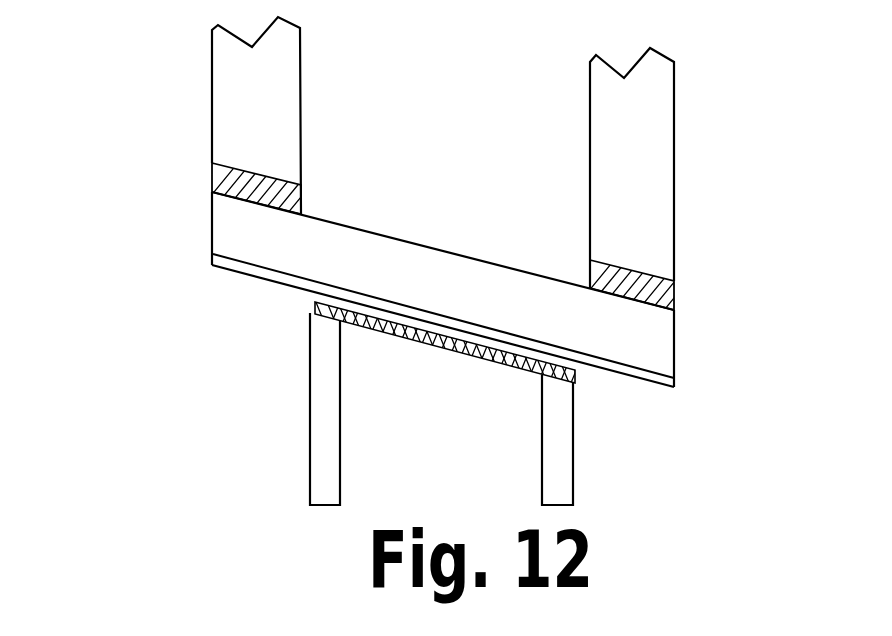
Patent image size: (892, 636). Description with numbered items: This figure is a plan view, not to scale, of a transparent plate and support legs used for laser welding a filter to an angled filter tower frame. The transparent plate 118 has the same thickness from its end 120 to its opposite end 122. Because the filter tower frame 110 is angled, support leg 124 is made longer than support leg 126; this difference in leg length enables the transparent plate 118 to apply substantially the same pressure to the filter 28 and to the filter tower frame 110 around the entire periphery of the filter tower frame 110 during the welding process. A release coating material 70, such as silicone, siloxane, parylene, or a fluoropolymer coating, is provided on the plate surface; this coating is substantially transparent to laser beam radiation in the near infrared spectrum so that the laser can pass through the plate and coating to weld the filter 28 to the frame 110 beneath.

The support leg 126 is at (238, 98).
The support leg 124 is at (648, 138).
The end of transparent plate 122 is at (200, 231).
The transparent plate 118 is at (480, 293).
The end of transparent plate 120 is at (690, 330).
The release coating material 70 is at (655, 374).
The filter 28 is at (416, 352).
The filter tower frame 110 is at (565, 450).